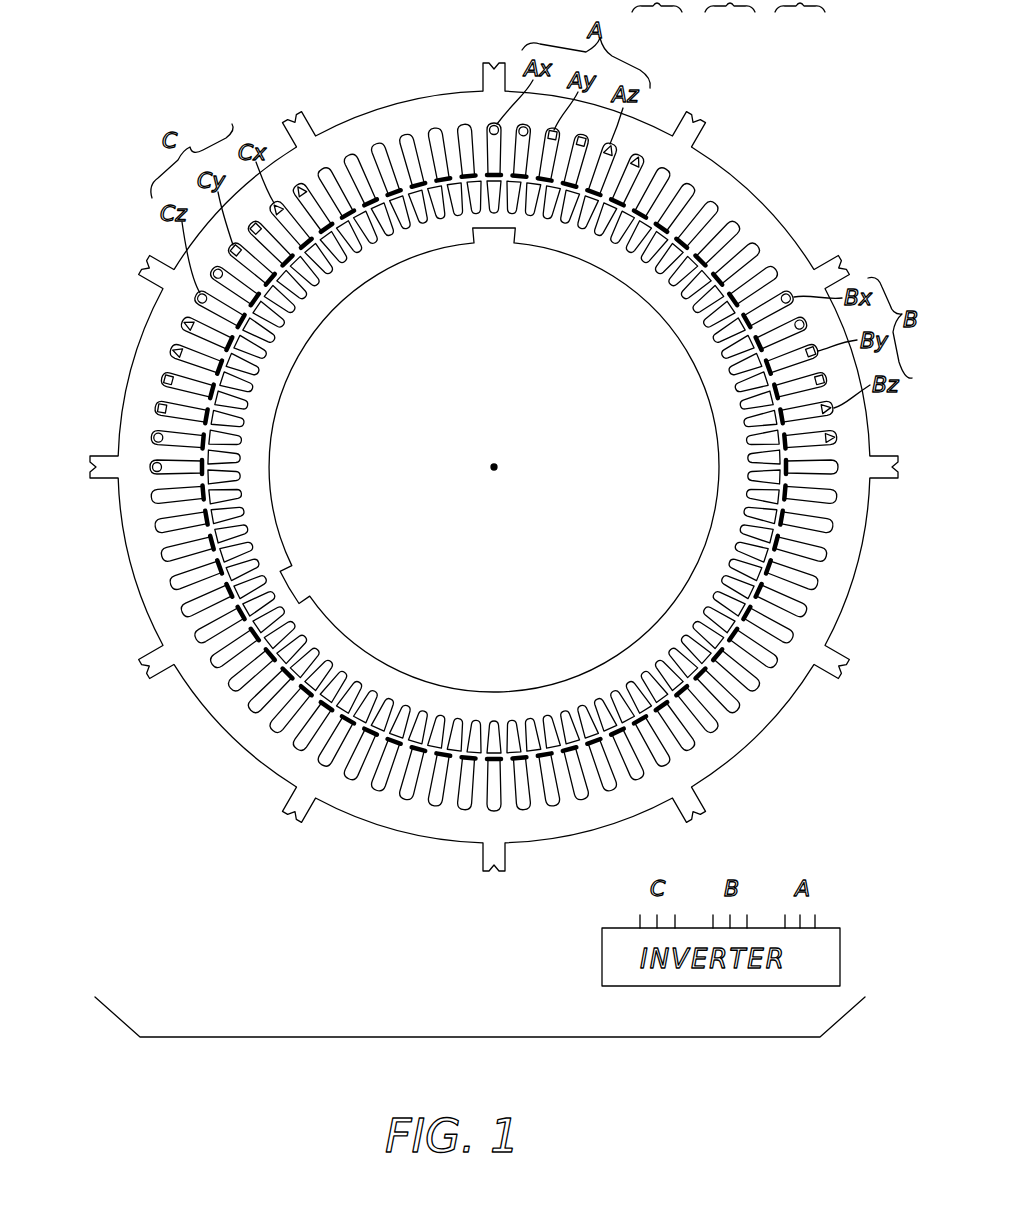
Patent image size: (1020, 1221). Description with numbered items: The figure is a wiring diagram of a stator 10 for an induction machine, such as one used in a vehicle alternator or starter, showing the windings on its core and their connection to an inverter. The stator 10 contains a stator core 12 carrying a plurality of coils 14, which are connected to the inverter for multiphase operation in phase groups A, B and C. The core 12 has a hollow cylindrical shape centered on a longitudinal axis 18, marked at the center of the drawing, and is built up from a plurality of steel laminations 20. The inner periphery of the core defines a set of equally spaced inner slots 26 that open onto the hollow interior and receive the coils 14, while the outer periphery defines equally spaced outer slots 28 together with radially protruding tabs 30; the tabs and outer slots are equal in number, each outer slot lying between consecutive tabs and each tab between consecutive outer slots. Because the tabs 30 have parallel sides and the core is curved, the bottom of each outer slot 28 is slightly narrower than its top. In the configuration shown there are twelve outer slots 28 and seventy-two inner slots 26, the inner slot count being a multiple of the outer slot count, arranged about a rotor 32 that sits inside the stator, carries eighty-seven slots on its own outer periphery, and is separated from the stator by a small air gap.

The stator 10 is at (118, 152).
The stator core 12 is at (140, 373).
The coils 14 is at (793, 292).
The longitudinal axis 18 is at (496, 465).
The steel laminations 20 is at (150, 338).
The inner slots 26 is at (157, 551).
The outer slots 28 is at (108, 503).
The tabs 30 is at (146, 267).
The rotor 32 is at (276, 525).